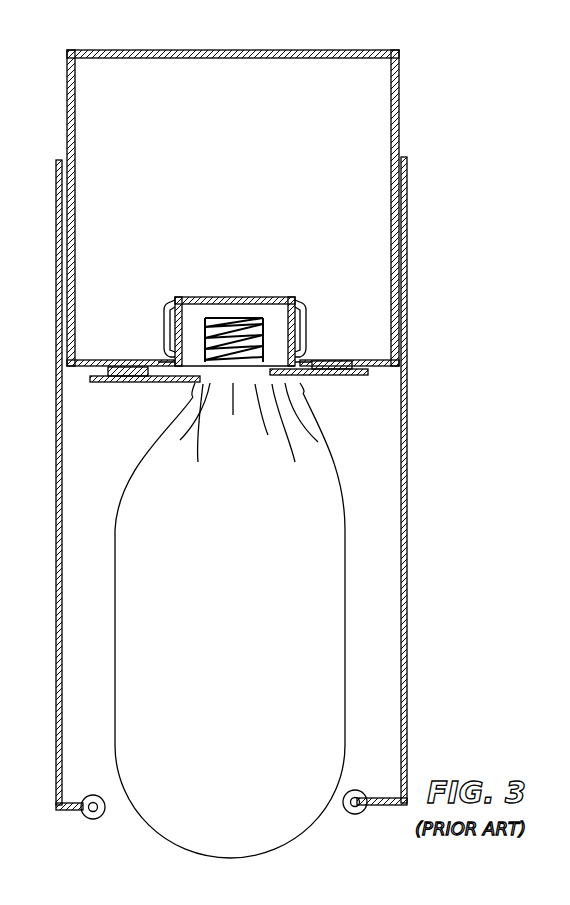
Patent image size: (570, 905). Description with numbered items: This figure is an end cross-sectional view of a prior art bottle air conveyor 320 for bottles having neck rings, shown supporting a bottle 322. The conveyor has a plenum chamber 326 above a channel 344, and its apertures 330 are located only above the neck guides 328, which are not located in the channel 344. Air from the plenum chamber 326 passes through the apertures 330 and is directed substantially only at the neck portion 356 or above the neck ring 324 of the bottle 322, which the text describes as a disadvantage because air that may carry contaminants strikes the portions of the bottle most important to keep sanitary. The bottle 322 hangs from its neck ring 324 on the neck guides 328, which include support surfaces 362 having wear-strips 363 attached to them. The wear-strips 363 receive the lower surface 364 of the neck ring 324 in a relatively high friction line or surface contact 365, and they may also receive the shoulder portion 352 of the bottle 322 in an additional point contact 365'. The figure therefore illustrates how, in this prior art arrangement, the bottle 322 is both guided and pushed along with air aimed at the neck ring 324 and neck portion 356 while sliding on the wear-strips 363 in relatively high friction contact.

The prior art bottle air conveyor 320 is at (418, 232).
The bottle 322 is at (256, 605).
The neck ring 324 is at (233, 383).
The plenum chamber 326 is at (340, 112).
The neck guide 328 is at (142, 386).
The aperture 330 is at (168, 345).
The channel 344 is at (276, 310).
The shoulder portion 352 is at (150, 452).
The neck portion 356 is at (215, 318).
The support surface 362 is at (158, 402).
The wear-strip 363 is at (200, 425).
The lower surface 364 is at (258, 400).
The line or surface contact 365 is at (234, 343).
The point contact 365' is at (247, 439).